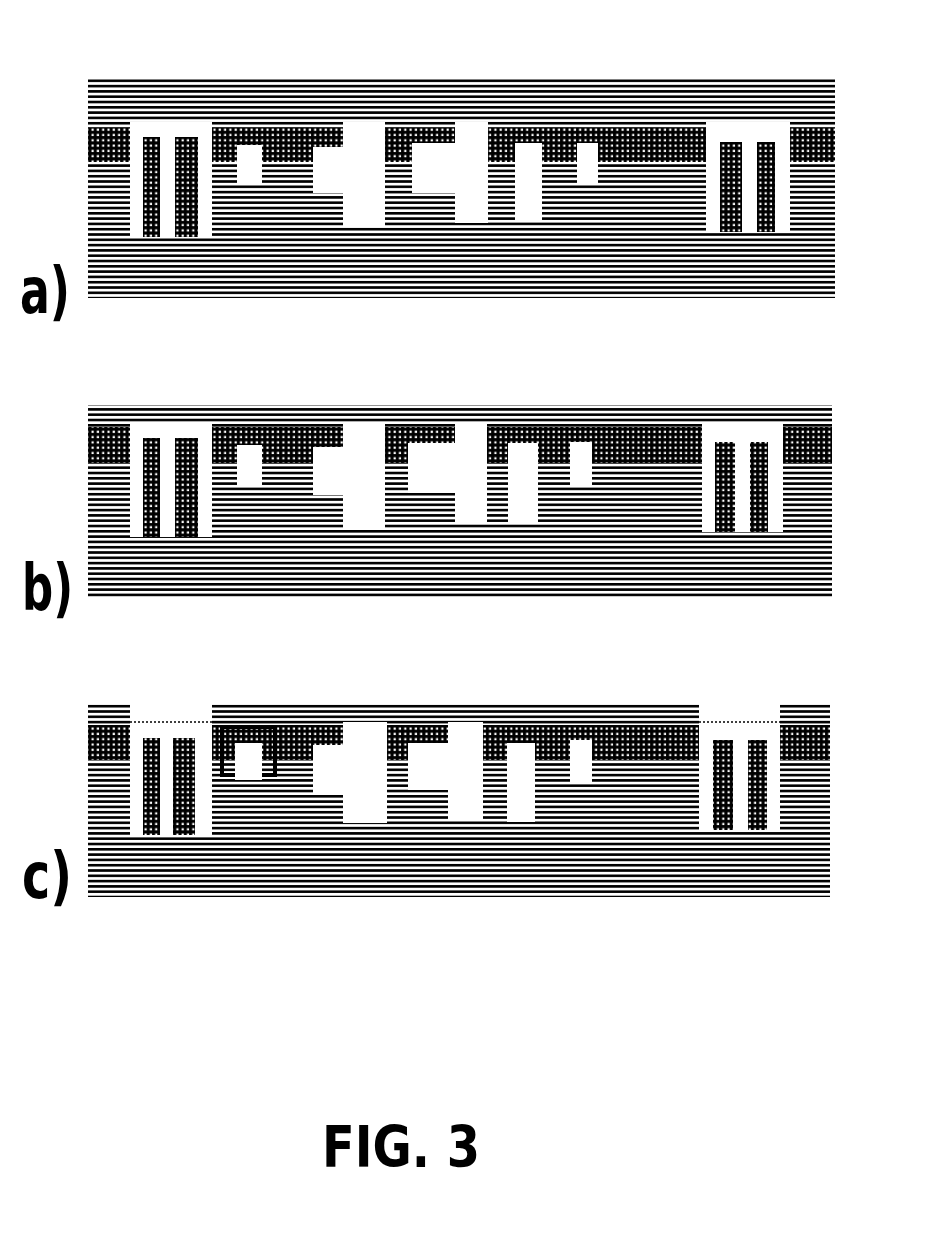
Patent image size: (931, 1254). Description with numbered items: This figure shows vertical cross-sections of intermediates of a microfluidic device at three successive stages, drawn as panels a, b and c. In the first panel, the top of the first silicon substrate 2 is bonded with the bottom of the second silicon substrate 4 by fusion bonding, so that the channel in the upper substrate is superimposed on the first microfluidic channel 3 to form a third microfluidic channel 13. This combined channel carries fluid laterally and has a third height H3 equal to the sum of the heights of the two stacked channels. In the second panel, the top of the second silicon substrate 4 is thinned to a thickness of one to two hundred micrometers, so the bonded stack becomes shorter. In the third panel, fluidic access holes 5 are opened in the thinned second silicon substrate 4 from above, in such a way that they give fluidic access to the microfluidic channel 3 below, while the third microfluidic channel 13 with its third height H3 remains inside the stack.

The first silicon substrate 2 is at (803, 293).
The second silicon substrate 4 is at (620, 87).
The third microfluidic channel 13 is at (371, 183).
The first microfluidic channel 3 is at (168, 823).
The fluidic access holes 5 is at (180, 730).
The third height H3 is at (379, 722).